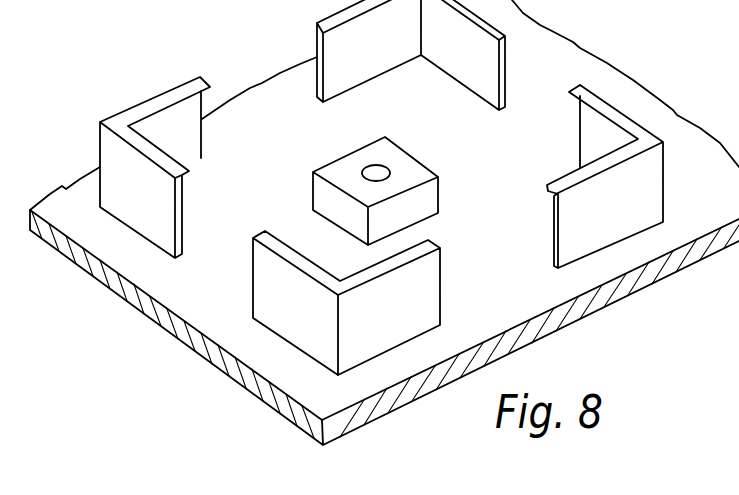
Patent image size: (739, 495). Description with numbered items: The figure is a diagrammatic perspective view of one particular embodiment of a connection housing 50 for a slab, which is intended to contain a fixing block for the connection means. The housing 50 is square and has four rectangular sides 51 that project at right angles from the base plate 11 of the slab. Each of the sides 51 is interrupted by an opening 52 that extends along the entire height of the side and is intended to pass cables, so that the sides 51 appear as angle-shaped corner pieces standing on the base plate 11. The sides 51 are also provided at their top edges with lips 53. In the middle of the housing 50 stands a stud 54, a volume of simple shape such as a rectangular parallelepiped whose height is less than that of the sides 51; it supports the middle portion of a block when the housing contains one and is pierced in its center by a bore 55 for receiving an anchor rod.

The base plate 11 is at (138, 315).
The connection housing 50 is at (636, 99).
The side 51 is at (118, 167).
The opening 52 is at (223, 267).
The lip 53 is at (178, 161).
The stud 54 is at (427, 200).
The bore 55 is at (375, 172).